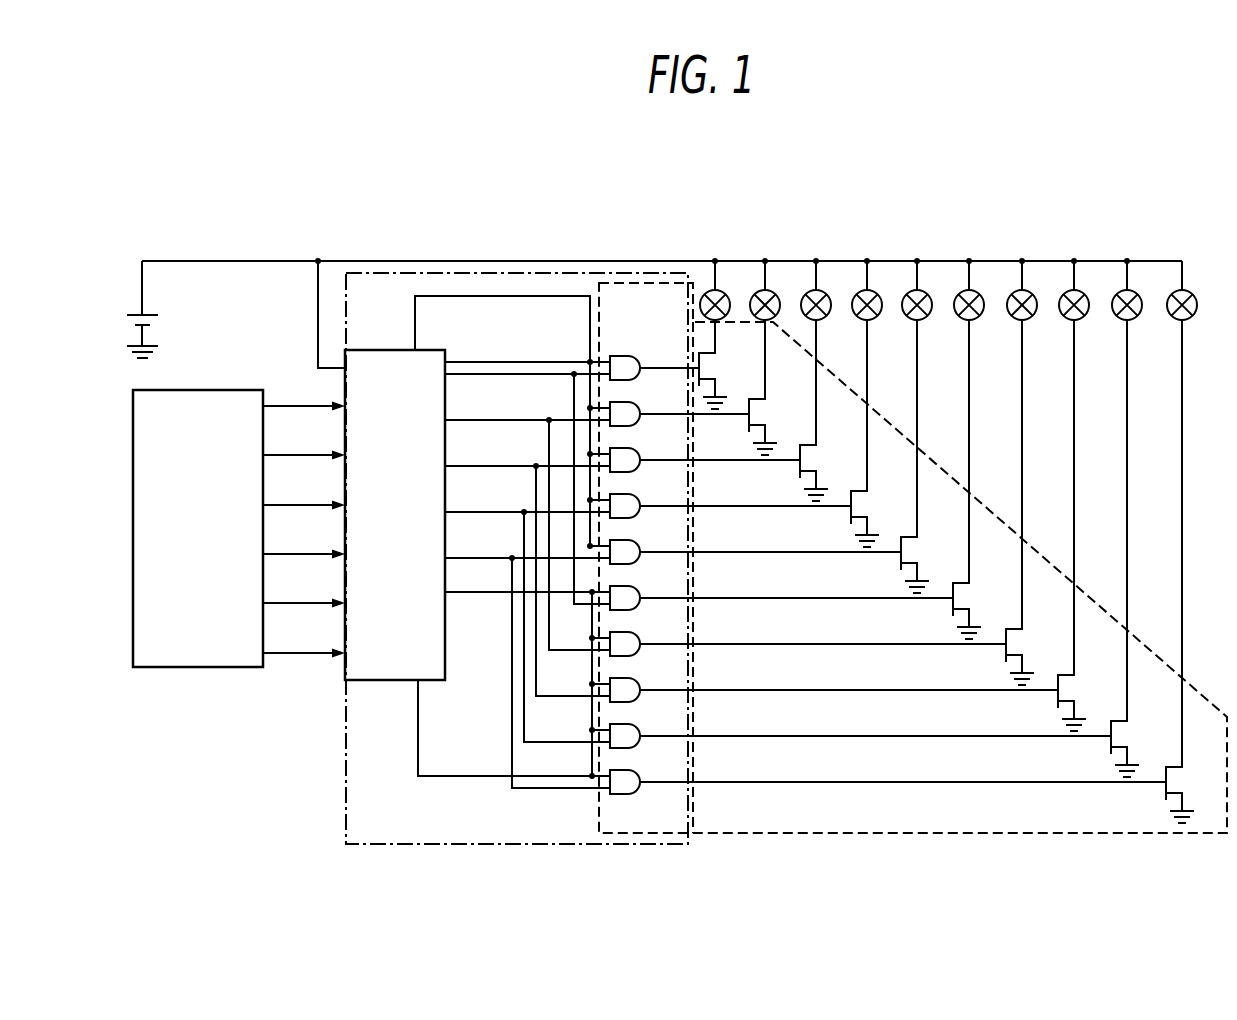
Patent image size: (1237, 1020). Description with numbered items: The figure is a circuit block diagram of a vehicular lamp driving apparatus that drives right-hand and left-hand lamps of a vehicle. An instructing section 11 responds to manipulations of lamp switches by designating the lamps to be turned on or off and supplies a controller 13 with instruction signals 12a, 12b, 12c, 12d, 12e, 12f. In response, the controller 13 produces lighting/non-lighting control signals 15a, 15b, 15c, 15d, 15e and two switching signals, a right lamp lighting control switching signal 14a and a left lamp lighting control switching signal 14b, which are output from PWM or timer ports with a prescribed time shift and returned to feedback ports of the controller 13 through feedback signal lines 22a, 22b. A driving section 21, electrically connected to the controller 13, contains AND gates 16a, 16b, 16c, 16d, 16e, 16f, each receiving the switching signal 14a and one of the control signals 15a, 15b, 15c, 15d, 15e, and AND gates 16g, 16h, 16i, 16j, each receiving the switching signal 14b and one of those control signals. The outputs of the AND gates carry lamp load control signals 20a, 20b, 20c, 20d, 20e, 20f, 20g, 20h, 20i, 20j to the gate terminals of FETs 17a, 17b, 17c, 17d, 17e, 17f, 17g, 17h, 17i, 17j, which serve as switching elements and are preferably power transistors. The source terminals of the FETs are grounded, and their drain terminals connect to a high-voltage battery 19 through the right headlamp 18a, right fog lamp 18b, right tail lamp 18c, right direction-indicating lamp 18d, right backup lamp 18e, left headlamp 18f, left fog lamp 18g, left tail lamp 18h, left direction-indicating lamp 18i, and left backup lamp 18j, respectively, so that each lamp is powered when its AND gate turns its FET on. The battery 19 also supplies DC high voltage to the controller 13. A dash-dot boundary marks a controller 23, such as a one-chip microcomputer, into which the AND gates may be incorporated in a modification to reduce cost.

The instructing section 11 is at (193, 389).
The instruction signal 12a is at (280, 406).
The instruction signal 12b is at (280, 455).
The instruction signal 12c is at (280, 505).
The instruction signal 12d is at (280, 554).
The instruction signal 12e is at (280, 603).
The instruction signal 12f is at (280, 653).
The controller 13 is at (379, 349).
The right lamp lighting control switching signal 14a is at (553, 361).
The left lamp lighting control switching signal 14b is at (485, 593).
The lighting/non-lighting control signal 15a is at (484, 374).
The lighting/non-lighting control signal 15b is at (469, 420).
The lighting/non-lighting control signal 15c is at (469, 466).
The lighting/non-lighting control signal 15d is at (469, 512).
The lighting/non-lighting control signal 15e is at (469, 558).
The AND gate 16a is at (611, 356).
The AND gate 16b is at (640, 408).
The AND gate 16c is at (640, 454).
The AND gate 16d is at (640, 500).
The AND gate 16e is at (640, 546).
The AND gate 16f is at (640, 592).
The AND gate 16g is at (640, 638).
The AND gate 16h is at (640, 684).
The AND gate 16i is at (640, 730).
The AND gate 16j is at (640, 776).
The FET 17a is at (714, 367).
The FET 17b is at (764, 414).
The FET 17c is at (814, 461).
The FET 17d is at (865, 507).
The FET 17e is at (915, 553).
The FET 17f is at (967, 599).
The FET 17g is at (1020, 645).
The FET 17h is at (1072, 691).
The FET 17i is at (1125, 737).
The FET 17j is at (1180, 783).
The right headlamp 18a is at (707, 290).
The right fog lamp 18b is at (757, 290).
The right tail lamp 18c is at (808, 290).
The right direction-indicating lamp 18d is at (859, 290).
The right backup lamp 18e is at (909, 290).
The left headlamp 18f is at (961, 290).
The left fog lamp 18g is at (1014, 290).
The left tail lamp 18h is at (1066, 290).
The left direction-indicating lamp 18i is at (1119, 290).
The left backup lamp 18j is at (1174, 290).
The high-voltage battery 19 is at (139, 314).
The lamp load control signal 20a is at (652, 366).
The lamp load control signal 20b is at (740, 412).
The lamp load control signal 20c is at (702, 459).
The lamp load control signal 20d is at (738, 505).
The lamp load control signal 20e is at (738, 551).
The lamp load control signal 20f is at (738, 597).
The lamp load control signal 20g is at (738, 643).
The lamp load control signal 20h is at (738, 689).
The lamp load control signal 20i is at (738, 735).
The lamp load control signal 20j is at (738, 781).
The driving section 21 is at (834, 834).
The feedback signal line 22a is at (455, 297).
The feedback signal line 22b is at (463, 777).
The controller 23 is at (346, 745).